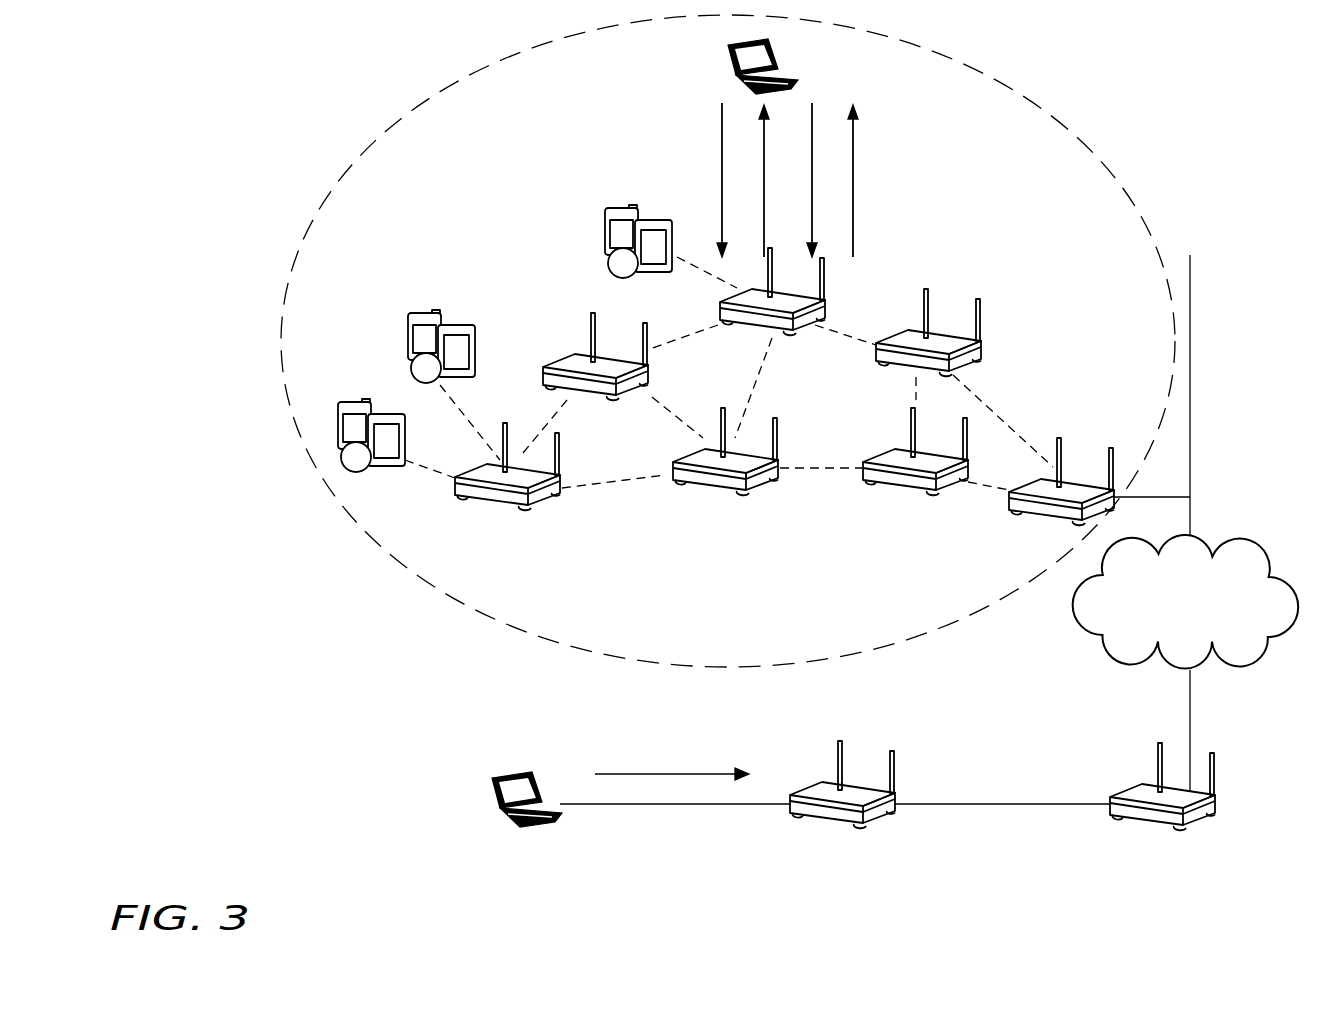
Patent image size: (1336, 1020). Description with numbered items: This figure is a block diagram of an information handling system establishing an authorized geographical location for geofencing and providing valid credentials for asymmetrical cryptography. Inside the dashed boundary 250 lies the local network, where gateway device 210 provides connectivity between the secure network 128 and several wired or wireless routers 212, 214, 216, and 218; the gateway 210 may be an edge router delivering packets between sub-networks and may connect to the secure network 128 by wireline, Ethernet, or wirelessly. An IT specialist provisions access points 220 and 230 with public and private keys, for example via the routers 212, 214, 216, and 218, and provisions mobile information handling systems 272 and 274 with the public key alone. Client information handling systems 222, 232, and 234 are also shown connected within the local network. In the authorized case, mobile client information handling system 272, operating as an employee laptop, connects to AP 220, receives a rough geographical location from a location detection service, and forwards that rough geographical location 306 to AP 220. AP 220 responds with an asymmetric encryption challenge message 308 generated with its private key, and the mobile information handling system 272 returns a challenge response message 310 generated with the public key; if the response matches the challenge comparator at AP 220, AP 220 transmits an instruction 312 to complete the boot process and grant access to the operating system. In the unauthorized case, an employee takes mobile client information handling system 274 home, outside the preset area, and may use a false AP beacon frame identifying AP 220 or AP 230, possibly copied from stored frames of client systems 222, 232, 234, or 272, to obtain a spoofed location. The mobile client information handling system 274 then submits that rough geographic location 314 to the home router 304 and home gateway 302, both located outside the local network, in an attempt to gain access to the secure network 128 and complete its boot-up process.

The secure network 128 is at (1102, 660).
The gateway device 210 is at (1046, 516).
The router 212 is at (982, 350).
The router 214 is at (912, 488).
The router 216 is at (752, 495).
The router 218 is at (565, 366).
The access point 220 is at (826, 310).
The client information handling system 222 is at (608, 208).
The access point 230 is at (532, 505).
The client information handling system 232 is at (414, 313).
The client information handling system 234 is at (346, 402).
The mesh network 250 is at (322, 207).
The mobile client information handling system 272 is at (722, 60).
The mobile client information handling system 274 is at (492, 774).
The home gateway 302 is at (1196, 820).
The home access point 304 is at (882, 823).
The rough geographical location 306 is at (720, 180).
The asymmetric encryption challenge message 308 is at (762, 133).
The challenge response message 310 is at (814, 165).
The instruction 312 is at (855, 213).
The rough geographic location 314 is at (658, 773).